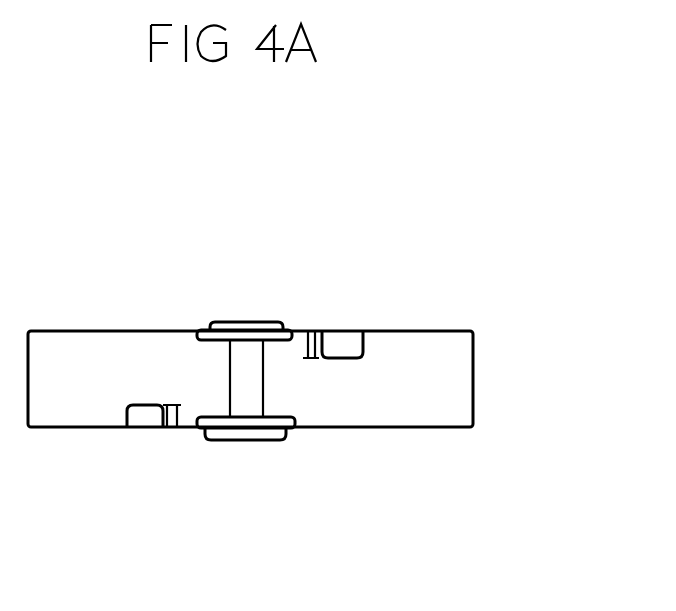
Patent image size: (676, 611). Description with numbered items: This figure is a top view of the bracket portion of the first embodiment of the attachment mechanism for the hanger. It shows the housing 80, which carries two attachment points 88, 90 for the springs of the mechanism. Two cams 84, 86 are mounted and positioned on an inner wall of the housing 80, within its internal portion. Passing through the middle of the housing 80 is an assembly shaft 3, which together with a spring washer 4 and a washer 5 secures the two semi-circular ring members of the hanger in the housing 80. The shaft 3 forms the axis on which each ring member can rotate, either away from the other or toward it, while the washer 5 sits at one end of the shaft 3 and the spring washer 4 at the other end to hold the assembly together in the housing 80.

The housing 80 is at (529, 395).
The cam 84 is at (341, 340).
The cam 86 is at (153, 415).
The attachment point 88 is at (303, 335).
The attachment point 90 is at (178, 418).
The washer 5 is at (207, 335).
The assembly shaft 3 is at (259, 438).
The spring washer 4 is at (290, 425).